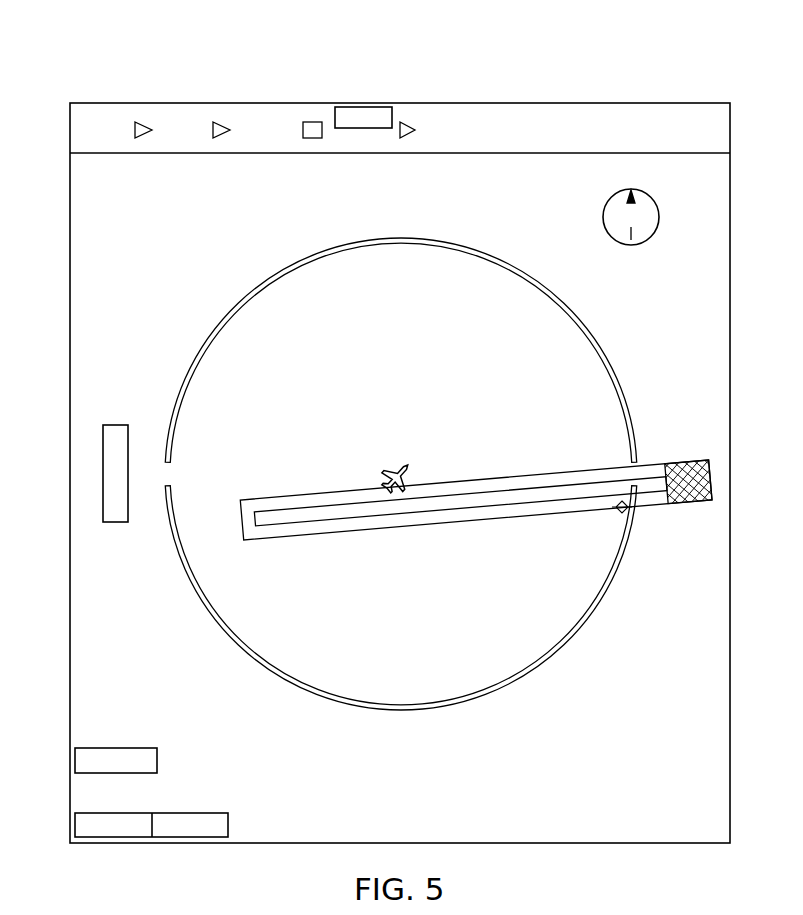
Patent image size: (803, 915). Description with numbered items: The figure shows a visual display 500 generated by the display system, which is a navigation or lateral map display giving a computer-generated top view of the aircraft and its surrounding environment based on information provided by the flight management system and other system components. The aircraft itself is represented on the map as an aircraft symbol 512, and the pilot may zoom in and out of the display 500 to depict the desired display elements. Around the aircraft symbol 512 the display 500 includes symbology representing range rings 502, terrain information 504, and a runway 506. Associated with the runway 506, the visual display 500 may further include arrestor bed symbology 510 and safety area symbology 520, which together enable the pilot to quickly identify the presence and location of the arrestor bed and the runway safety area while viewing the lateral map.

The visual display 500 is at (153, 74).
The range rings 502 is at (278, 292).
The terrain information 504 is at (84, 198).
The runway 506 is at (327, 523).
The arrestor bed symbology 510 is at (683, 499).
The aircraft symbol 512 is at (386, 463).
The safety area symbology 520 is at (305, 489).